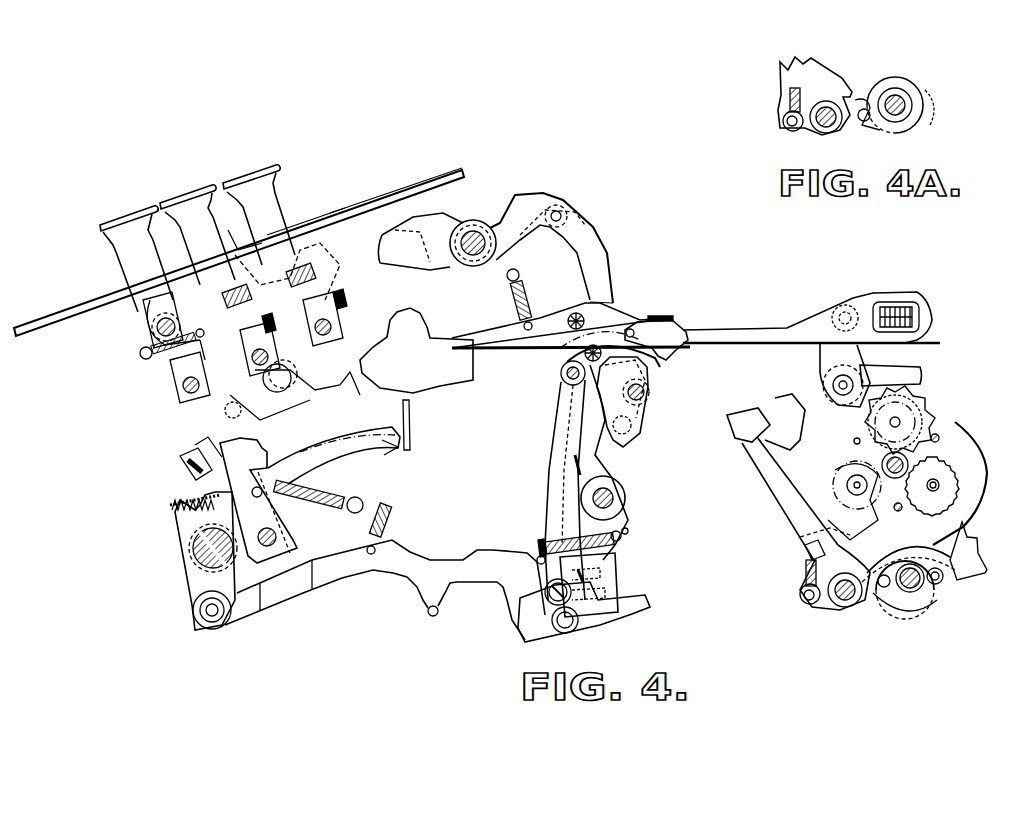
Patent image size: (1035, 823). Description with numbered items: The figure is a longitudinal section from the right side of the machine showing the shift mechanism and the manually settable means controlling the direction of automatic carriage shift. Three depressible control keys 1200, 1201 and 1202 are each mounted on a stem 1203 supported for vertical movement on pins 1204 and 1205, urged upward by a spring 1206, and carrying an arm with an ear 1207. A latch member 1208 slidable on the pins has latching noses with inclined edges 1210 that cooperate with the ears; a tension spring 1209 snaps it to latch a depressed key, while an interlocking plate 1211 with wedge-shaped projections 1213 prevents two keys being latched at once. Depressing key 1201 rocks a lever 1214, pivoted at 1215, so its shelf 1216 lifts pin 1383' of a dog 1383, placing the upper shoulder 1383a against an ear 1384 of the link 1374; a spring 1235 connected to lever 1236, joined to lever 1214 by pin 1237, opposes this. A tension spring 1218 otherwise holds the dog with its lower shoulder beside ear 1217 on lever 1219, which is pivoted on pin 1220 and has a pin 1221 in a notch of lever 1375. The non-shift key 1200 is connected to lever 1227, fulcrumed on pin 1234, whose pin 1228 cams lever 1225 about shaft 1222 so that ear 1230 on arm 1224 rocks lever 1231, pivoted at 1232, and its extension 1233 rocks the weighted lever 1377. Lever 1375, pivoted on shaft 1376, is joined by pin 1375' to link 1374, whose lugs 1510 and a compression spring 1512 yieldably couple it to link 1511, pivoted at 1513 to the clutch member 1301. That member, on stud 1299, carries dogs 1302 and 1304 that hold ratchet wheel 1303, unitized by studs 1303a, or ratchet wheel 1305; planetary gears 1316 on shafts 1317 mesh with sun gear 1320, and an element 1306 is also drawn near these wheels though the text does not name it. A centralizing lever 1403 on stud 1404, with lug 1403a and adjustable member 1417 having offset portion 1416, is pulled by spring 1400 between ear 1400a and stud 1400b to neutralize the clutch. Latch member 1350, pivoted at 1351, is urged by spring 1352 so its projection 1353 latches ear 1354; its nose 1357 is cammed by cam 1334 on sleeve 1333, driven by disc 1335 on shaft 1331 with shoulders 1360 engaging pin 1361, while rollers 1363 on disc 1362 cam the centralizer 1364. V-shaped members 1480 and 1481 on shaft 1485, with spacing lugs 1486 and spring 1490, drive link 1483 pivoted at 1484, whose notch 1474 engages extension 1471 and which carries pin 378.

In FIG. 4, the pin 378 is at (430, 618).
In FIG. 4, the non-shift key 1200 is at (180, 196).
In FIG. 4, the control key 1201 is at (280, 166).
In FIG. 4, the shift control key 1202 is at (126, 226).
In FIG. 4, the stem 1203 is at (135, 262).
In FIG. 4, the pin 1204 is at (157, 328).
In FIG. 4, the pin 1205 is at (180, 383).
In FIG. 4, the spring 1206 is at (344, 297).
In FIG. 4, the ear 1207 is at (190, 255).
In FIG. 4, the latch member 1208 is at (342, 212).
In FIG. 4, the tension spring 1209 is at (146, 350).
In FIG. 4, the inclined edges 1210 is at (165, 288).
In FIG. 4, the interlocking plate 1211 is at (160, 310).
In FIG. 4, the wedge-shaped projections 1213 is at (235, 221).
In FIG. 4, the lever 1214 is at (598, 232).
In FIG. 4, the pivot 1215 is at (476, 228).
In FIG. 4, the shelf 1216 is at (610, 358).
In FIG. 4, the ear 1217 is at (665, 355).
In FIG. 4, the tension spring 1218 is at (524, 290).
In FIG. 4, the lever 1219 is at (650, 375).
In FIG. 4, the stationary pin 1220 is at (646, 394).
In FIG. 4, the pin 1221 is at (633, 425).
In FIG. 4, the pivot shaft 1222 is at (277, 535).
In FIG. 4, the arm 1224 is at (355, 432).
In FIG. 4, the lever 1225 is at (258, 494).
In FIG. 4, the lever 1227 is at (246, 400).
In FIG. 4, the pin 1228 is at (224, 412).
In FIG. 4, the ear 1230 is at (399, 450).
In FIG. 4, the lever 1231 is at (412, 435).
In FIG. 4, the pivot 1232 is at (320, 385).
In FIG. 4, the extension 1233 is at (412, 412).
In FIG. 4, the pin 1234 is at (184, 462).
In FIG. 4, the spring 1235 is at (350, 498).
In FIG. 4, the lever 1236 is at (455, 215).
In FIG. 4, the pin 1237 is at (560, 211).
In FIG. 4, the stud 1299 is at (838, 385).
In FIG. 4, the clutch member 1301 is at (820, 360).
In FIG. 4, the latch dog 1302 is at (926, 372).
In FIG. 4, the ratchet wheel 1303 is at (930, 408).
In FIG. 4, the studs 1303a is at (854, 444).
In FIG. 4, the latch dog 1304 is at (800, 537).
In FIG. 4, the second ratchet wheel 1305 is at (920, 436).
In FIG. 4, the pin 1306 is at (940, 440).
In FIG. 4, the planetary gears 1316 is at (950, 486).
In FIG. 4, the shafts 1317 is at (906, 466).
In FIG. 4, the sun gear 1320 is at (847, 486).
In FIG. 4, the shaft 1331 is at (912, 592).
In FIG. 4A, the shaft 1331 is at (897, 103).
In FIG. 4A, the sleeve 1333 is at (912, 104).
In FIG. 4, the cam 1334 is at (900, 612).
In FIG. 4A, the cam 1334 is at (910, 138).
In FIG. 4, the disc 1335 is at (890, 600).
In FIG. 4A, the disc 1335 is at (895, 90).
In FIG. 4, the latch member 1350 is at (775, 490).
In FIG. 4A, the latch member 1350 is at (812, 70).
In FIG. 4, the pivot 1351 is at (840, 600).
In FIG. 4A, the pivot 1351 is at (828, 127).
In FIG. 4, the spring 1352 is at (804, 575).
In FIG. 4A, the spring 1352 is at (790, 100).
In FIG. 4, the projection 1353 is at (752, 430).
In FIG. 4, the ear 1354 is at (790, 420).
In FIG. 4, the nose 1357 is at (806, 548).
In FIG. 4A, the nose 1357 is at (850, 92).
In FIG. 4A, the shoulders 1360 is at (918, 132).
In FIG. 4, the pin 1361 is at (880, 588).
In FIG. 4A, the pin 1361 is at (865, 122).
In FIG. 4, the second disc 1362 is at (968, 570).
In FIG. 4, the rollers 1363 is at (945, 584).
In FIG. 4, the centralizer 1364 is at (968, 530).
In FIG. 4, the link 1374 is at (745, 332).
In FIG. 4, the lever 1375 is at (633, 462).
In FIG. 4, the pin 1375' is at (558, 309).
In FIG. 4, the shaft 1376 is at (615, 496).
In FIG. 4, the weighted lever 1377 is at (425, 330).
In FIG. 4, the dog 1383 is at (571, 335).
In FIG. 4, the pin 1383' is at (664, 285).
In FIG. 4, the upper shoulder 1383a is at (690, 330).
In FIG. 4, the ear 1384 is at (660, 315).
In FIG. 4, the tension spring 1400 is at (620, 530).
In FIG. 4, the ear 1400a is at (538, 540).
In FIG. 4, the stud 1400b is at (630, 533).
In FIG. 4, the centralizing lever 1403 is at (550, 490).
In FIG. 4, the lug 1403a is at (576, 465).
In FIG. 4, the stud 1404 is at (565, 375).
In FIG. 4, the offset portion 1416 is at (584, 572).
In FIG. 4, the adjustable member 1417 is at (548, 592).
In FIG. 4, the lateral extension 1471 is at (612, 612).
In FIG. 4, the notch 1474 is at (580, 625).
In FIG. 4, the V-shaped member 1480 is at (180, 538).
In FIG. 4, the V-shaped member 1481 is at (200, 580).
In FIG. 4, the link 1483 is at (368, 580).
In FIG. 4, the pivot 1484 is at (212, 614).
In FIG. 4, the shaft 1485 is at (205, 550).
In FIG. 4, the spacing lugs 1486 is at (168, 510).
In FIG. 4, the compression spring 1490 is at (185, 500).
In FIG. 4, the lugs 1510 is at (895, 302).
In FIG. 4, the link 1511 is at (860, 303).
In FIG. 4, the compression spring 1512 is at (920, 345).
In FIG. 4, the pivot 1513 is at (845, 306).